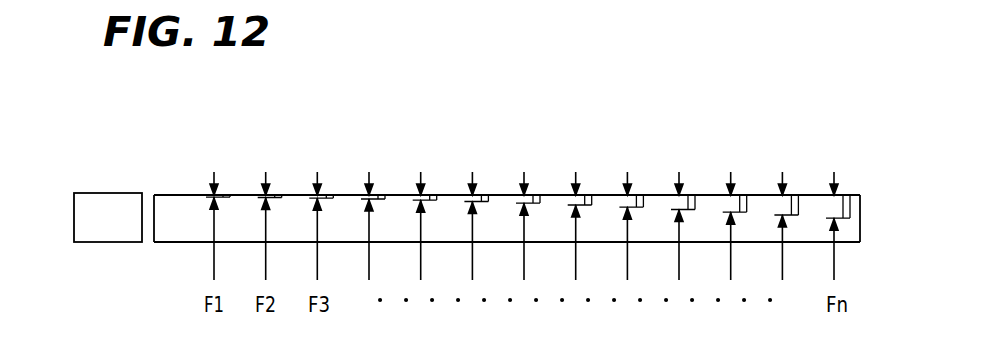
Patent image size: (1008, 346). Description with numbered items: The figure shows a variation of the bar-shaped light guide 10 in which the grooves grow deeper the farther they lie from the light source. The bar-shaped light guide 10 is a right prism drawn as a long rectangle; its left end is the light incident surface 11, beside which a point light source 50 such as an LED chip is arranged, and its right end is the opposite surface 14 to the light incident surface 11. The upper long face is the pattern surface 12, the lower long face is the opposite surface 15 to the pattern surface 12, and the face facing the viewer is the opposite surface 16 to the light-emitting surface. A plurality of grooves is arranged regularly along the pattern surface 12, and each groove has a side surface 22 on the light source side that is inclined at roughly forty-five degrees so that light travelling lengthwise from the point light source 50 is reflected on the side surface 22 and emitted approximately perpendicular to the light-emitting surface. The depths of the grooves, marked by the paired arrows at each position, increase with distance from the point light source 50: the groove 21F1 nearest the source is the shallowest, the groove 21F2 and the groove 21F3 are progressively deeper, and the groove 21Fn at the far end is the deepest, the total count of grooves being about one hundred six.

The bar-shaped light guide 10 is at (447, 195).
The light incident surface 11 is at (150, 201).
The pattern surface 12 is at (655, 196).
The opposite surface to the light incident surface 14 is at (862, 223).
The opposite surface to the pattern surface 15 is at (183, 241).
The opposite surface to the light-emitting surface 16 is at (493, 212).
The side surface of the groove 22 is at (594, 196).
The point light source 50 is at (83, 212).
The groove 21F1 is at (227, 196).
The groove 21F2 is at (277, 196).
The groove 21F3 is at (330, 196).
The groove 21Fn is at (845, 198).